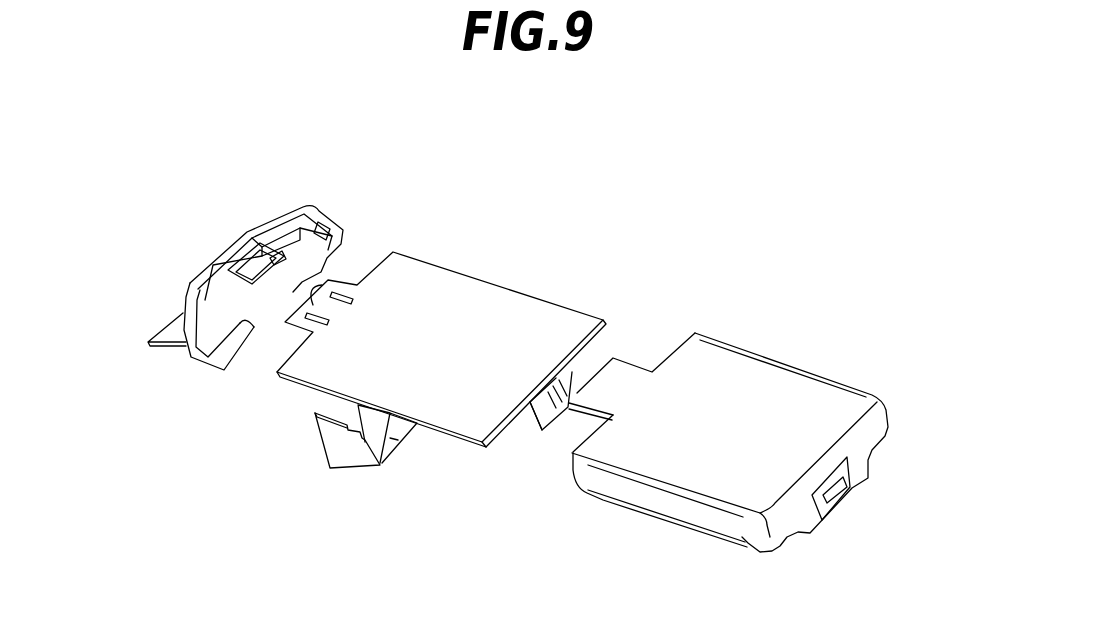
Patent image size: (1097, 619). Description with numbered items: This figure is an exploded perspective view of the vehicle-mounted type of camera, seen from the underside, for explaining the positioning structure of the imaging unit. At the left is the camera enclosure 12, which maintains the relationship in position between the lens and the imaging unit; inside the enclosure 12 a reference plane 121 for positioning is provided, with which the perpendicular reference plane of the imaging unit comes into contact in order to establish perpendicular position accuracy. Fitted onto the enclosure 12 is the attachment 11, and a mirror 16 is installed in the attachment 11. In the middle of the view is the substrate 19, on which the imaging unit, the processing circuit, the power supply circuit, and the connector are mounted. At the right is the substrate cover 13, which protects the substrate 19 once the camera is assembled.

The attachment 11 is at (347, 450).
The camera enclosure 12 is at (200, 277).
The reference plane 121 is at (230, 287).
The substrate cover 13 is at (768, 393).
The mirror 16 is at (175, 336).
The substrate 19 is at (509, 313).